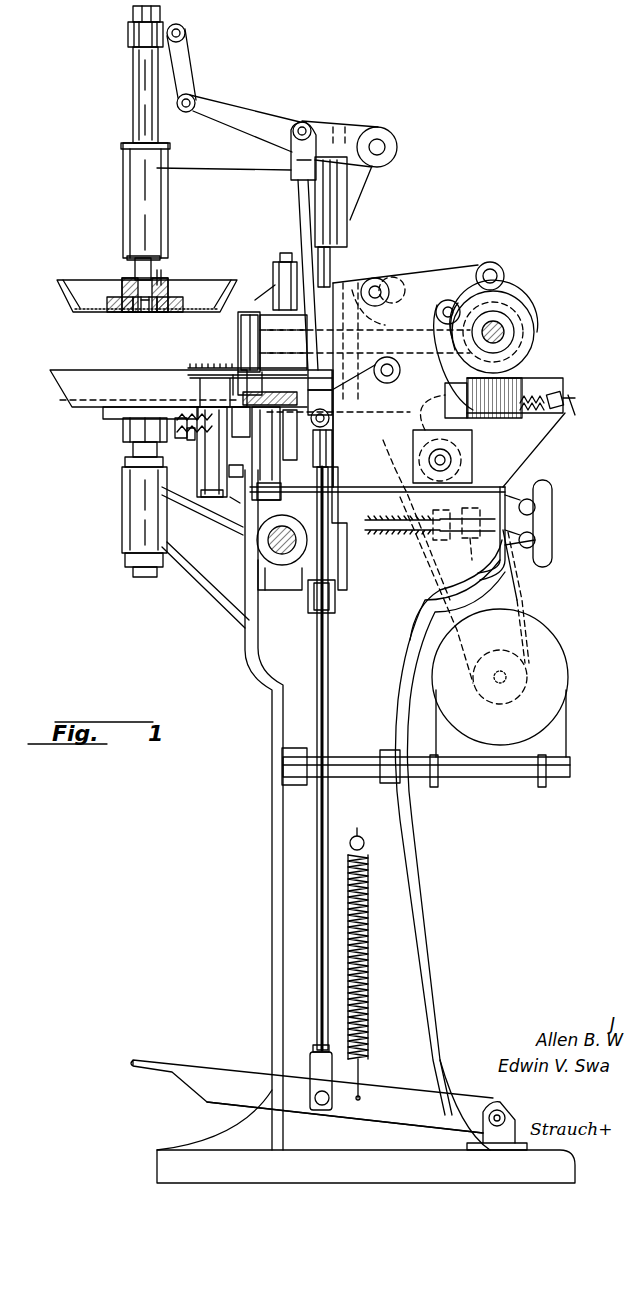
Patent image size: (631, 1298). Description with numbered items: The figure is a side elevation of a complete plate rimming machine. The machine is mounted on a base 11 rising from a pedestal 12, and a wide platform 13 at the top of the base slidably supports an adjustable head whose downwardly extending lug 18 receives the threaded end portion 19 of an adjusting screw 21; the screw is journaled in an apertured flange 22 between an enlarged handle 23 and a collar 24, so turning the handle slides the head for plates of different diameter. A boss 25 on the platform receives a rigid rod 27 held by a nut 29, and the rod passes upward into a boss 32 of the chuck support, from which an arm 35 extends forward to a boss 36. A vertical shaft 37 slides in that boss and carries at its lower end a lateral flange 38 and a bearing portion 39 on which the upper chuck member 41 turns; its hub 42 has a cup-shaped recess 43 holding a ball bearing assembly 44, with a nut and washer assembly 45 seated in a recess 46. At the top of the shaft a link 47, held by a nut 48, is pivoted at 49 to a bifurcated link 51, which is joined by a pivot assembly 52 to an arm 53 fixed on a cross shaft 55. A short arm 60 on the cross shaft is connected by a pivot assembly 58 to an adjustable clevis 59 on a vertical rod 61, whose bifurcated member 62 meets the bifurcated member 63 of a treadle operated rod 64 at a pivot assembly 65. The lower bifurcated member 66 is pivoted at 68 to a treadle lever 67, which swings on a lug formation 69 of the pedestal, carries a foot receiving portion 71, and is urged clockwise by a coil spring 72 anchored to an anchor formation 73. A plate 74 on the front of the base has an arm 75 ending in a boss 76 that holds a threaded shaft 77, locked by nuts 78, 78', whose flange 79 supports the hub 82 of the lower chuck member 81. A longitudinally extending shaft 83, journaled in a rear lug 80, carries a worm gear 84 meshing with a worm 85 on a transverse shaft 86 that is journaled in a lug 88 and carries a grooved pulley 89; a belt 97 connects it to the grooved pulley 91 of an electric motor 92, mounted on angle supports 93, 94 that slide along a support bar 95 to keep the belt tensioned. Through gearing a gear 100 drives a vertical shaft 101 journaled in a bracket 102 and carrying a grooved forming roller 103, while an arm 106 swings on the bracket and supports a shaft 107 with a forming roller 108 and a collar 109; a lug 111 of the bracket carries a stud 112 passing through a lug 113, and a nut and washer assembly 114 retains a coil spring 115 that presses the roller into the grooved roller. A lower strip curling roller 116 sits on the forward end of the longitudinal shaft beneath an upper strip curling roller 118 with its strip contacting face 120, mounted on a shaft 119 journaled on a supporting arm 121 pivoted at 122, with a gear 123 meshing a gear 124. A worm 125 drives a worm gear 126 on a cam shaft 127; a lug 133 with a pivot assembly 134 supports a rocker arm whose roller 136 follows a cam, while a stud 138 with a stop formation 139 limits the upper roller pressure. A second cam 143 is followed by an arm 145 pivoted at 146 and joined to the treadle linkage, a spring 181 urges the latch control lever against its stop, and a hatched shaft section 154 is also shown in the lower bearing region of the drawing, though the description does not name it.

The base 11 is at (405, 893).
The pedestal 12 is at (157, 1158).
The platform 13 is at (505, 492).
The lug 18 is at (436, 590).
The threaded end portion 19 is at (386, 531).
The adjusting screw 21 is at (466, 536).
The apertured flange 22 is at (512, 553).
The handle 23 is at (552, 545).
The collar 24 is at (470, 568).
The boss 25 is at (348, 565).
The rod 27 is at (332, 258).
The nut 29 is at (345, 590).
The boss 32 is at (347, 215).
The arm 35 is at (345, 127).
The boss 36 is at (123, 185).
The vertical shaft 37 is at (133, 90).
The lateral flange 38 is at (168, 284).
The bearing portion 39 is at (134, 282).
The upper chuck member 41 is at (230, 290).
The hub 42 is at (158, 313).
The annular cup-shaped recess 43 is at (121, 295).
The ball bearing assembly 44 is at (160, 284).
The nut and washer assembly 45 is at (145, 312).
The recess 46 is at (133, 312).
The link 47 is at (127, 38).
The nut 48 is at (131, 17).
The pivot 49 is at (186, 32).
The bifurcated link 51 is at (190, 67).
The pivot assembly 52 is at (193, 98).
The arm 53 is at (249, 102).
The cross shaft 55 is at (385, 146).
The pivot assembly 58 is at (306, 122).
The adjustable clevis 59 is at (291, 148).
The short arm 60 is at (341, 126).
The vertical rod 61 is at (300, 205).
The bifurcated member 62 is at (333, 375).
The bifurcated member 63 is at (336, 428).
The treadle operated rod 64 is at (328, 712).
The pivot assembly 65 is at (322, 448).
The bifurcated member 66 is at (312, 1065).
The treadle lever 67 is at (395, 1098).
The pivot assembly 68 is at (322, 1105).
The lug formation 69 is at (500, 1110).
The foot receiving portion 71 is at (152, 1063).
The coil spring 72 is at (370, 957).
The anchor formation 73 is at (360, 838).
The plate 74 is at (243, 630).
The arm 75 is at (205, 585).
The boss 76 is at (122, 518).
The threaded shaft 77 is at (145, 578).
The locking nut 78 is at (129, 567).
The locking nut 78' is at (125, 460).
The flange 79 is at (133, 445).
The lug 80 is at (553, 386).
The lower chuck member 81 is at (70, 382).
The hub 82 is at (123, 424).
The longitudinally extending shaft 83 is at (570, 400).
The worm gear 84 is at (462, 428).
The worm 85 is at (452, 456).
The transverse shaft 86 is at (452, 458).
The lug 88 is at (448, 475).
The grooved pulley 89 is at (403, 461).
The grooved pulley 91 is at (508, 703).
The electric motor 92 is at (566, 672).
The angle support 93 is at (434, 787).
The angle support 94 is at (541, 787).
The support bar 95 is at (480, 778).
The belt 97 is at (518, 585).
The gear 100 is at (308, 399).
The vertical shaft 101 is at (283, 528).
The bracket 102 is at (300, 435).
The grooved forming roller 103 is at (280, 392).
The arm 106 is at (210, 472).
The shaft 107 is at (208, 505).
The forming roller 108 is at (192, 366).
The collar 109 is at (222, 500).
The lug 111 is at (271, 453).
The stud 112 is at (247, 433).
The lug 113 is at (212, 452).
The nut and washer assembly 114 is at (190, 434).
The coil spring 115 is at (182, 449).
The lower strip curling roller 116 is at (238, 385).
The upper strip curling roller 118 is at (244, 318).
The shaft 119 is at (272, 330).
The strip contacting face 120 is at (241, 327).
The supporting arm 121 is at (372, 320).
The pivot assembly 122 is at (362, 378).
The gear 123 is at (440, 306).
The gear 124 is at (405, 404).
The worm 125 is at (520, 350).
The worm gear 126 is at (525, 310).
The cam shaft 127 is at (504, 332).
The lug 133 is at (388, 283).
The pivot assembly 134 is at (368, 341).
The roller 136 is at (494, 263).
The stud 138 is at (283, 265).
The stop formation 139 is at (276, 305).
The second cam 143 is at (523, 303).
The arm 145 is at (426, 428).
The pivot 146 is at (495, 422).
The shaft 154 is at (280, 554).
The spring 181 is at (558, 420).